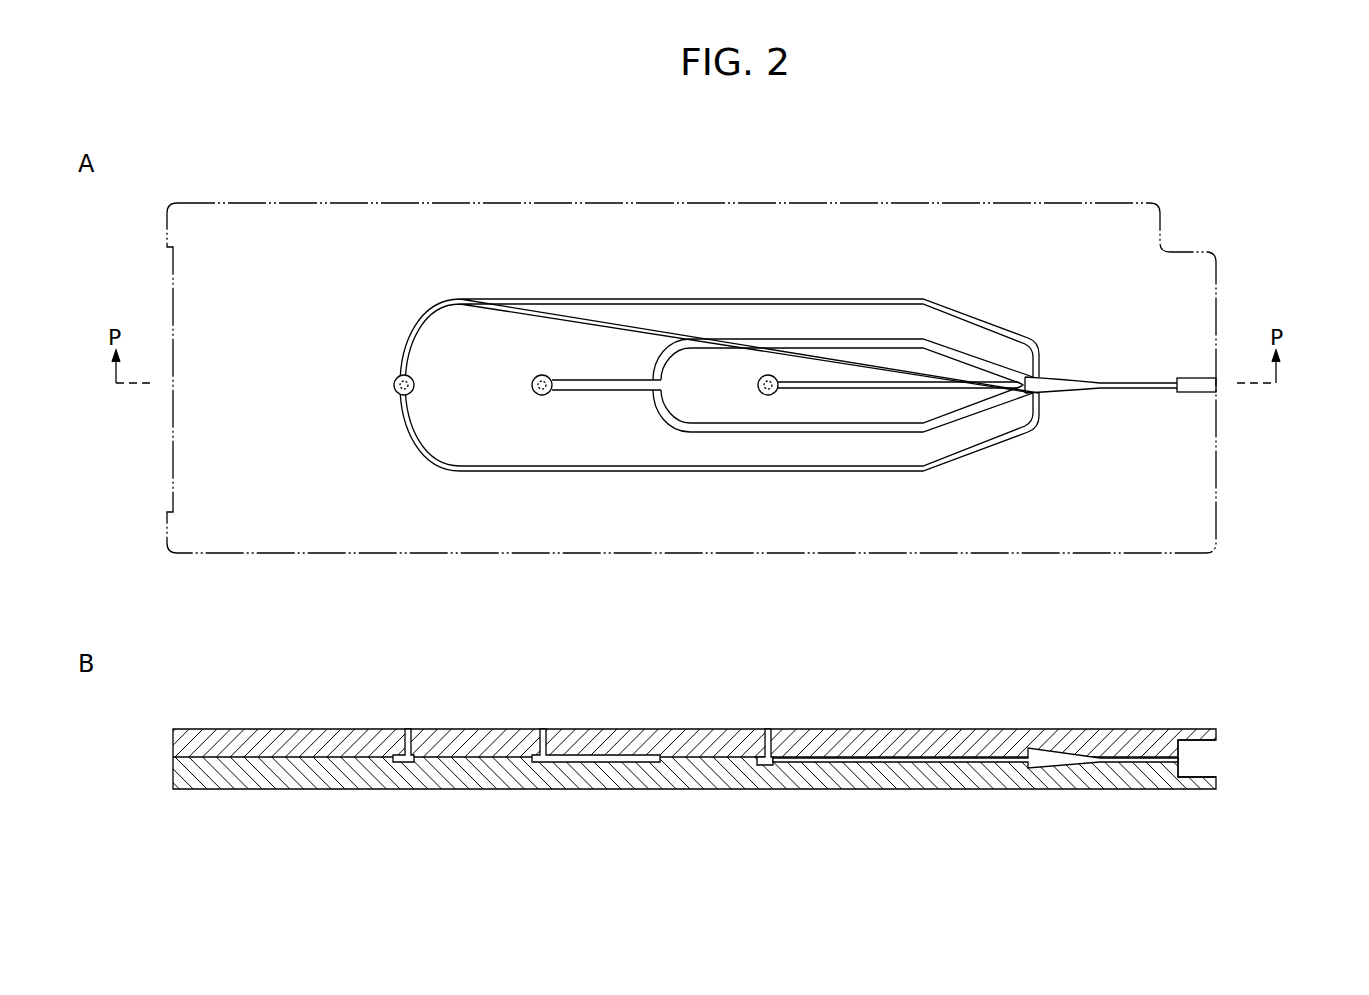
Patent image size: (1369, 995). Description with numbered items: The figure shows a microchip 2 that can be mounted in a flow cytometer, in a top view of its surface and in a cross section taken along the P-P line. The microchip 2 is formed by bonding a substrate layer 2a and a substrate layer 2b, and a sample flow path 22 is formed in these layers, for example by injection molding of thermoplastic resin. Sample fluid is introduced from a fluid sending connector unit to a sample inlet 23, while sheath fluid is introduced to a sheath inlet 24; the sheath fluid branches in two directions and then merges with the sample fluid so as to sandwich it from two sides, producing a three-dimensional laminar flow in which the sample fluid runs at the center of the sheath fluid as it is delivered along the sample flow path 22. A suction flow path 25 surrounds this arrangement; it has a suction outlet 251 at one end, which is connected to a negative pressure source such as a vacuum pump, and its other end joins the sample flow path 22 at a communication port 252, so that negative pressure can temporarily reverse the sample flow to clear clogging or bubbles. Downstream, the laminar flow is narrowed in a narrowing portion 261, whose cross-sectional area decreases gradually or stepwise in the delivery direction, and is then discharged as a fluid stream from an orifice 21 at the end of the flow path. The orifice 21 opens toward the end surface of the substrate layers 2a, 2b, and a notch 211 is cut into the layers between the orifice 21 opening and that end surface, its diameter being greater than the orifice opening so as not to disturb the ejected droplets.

The microchip 2 is at (423, 203).
The substrate layer 2a is at (228, 541).
The substrate layer 2b is at (205, 790).
The orifice 21 is at (1185, 389).
The notch 211 is at (1197, 747).
The sample flow path 22 is at (1143, 747).
The sample inlet 23 is at (768, 375).
The sheath inlet 24 is at (543, 728).
The suction flow path 25 is at (633, 497).
The suction outlet 251 is at (407, 728).
The communication port 252 is at (1057, 440).
The narrowing portion 261 is at (1127, 350).